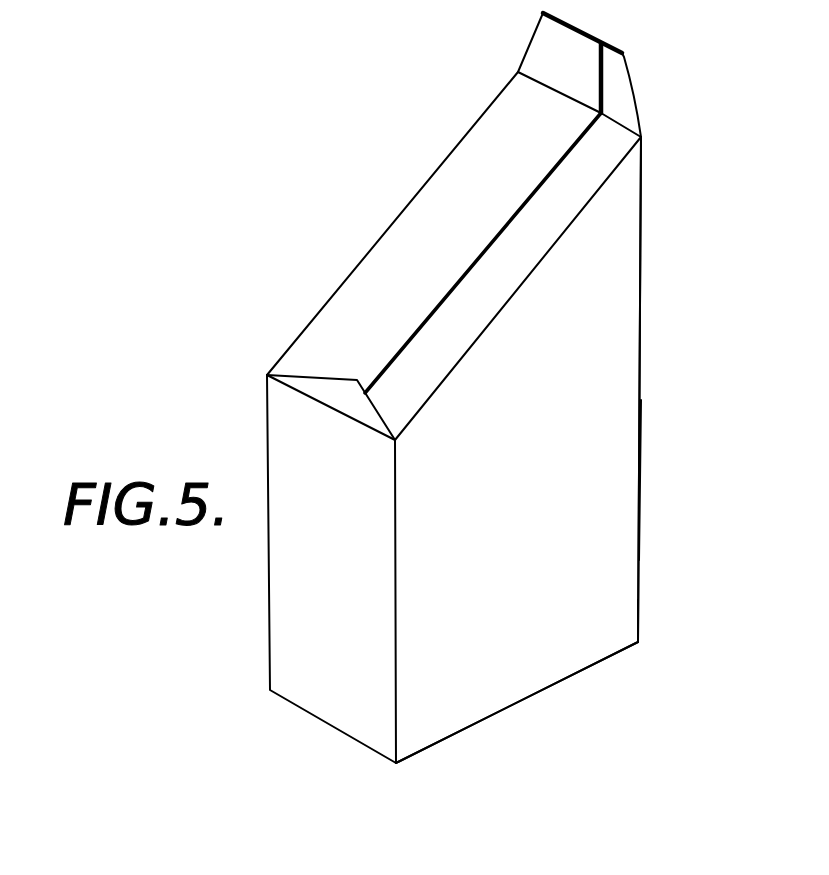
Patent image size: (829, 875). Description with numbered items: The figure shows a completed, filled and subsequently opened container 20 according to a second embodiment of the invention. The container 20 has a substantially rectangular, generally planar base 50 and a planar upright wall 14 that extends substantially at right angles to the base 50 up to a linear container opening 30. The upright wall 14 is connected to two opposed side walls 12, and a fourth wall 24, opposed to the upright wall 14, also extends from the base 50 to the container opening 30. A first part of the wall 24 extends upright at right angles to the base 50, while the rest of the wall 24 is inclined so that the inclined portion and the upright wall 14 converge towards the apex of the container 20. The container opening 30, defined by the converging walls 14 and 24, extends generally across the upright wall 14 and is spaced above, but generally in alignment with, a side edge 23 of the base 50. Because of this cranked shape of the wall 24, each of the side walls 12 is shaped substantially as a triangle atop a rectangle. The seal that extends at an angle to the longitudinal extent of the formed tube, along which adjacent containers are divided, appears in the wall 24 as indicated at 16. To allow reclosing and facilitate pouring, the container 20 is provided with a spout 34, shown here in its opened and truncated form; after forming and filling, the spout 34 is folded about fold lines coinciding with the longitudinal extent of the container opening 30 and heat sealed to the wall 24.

The side walls 12 is at (522, 438).
The upright wall 14 is at (642, 302).
The seal in wall portion 16 is at (455, 273).
The container 20 is at (650, 522).
The side edge of the base 23 is at (638, 643).
The fourth wall 24 is at (372, 234).
The container opening 30 is at (547, 87).
The spout 34 is at (527, 45).
The base 50 is at (482, 722).